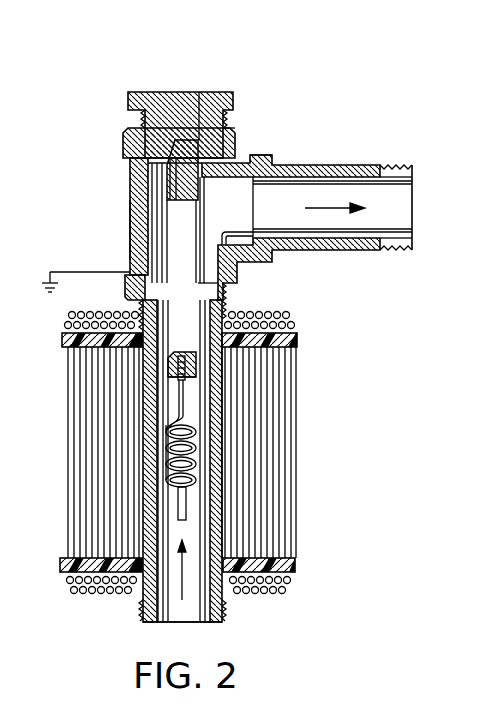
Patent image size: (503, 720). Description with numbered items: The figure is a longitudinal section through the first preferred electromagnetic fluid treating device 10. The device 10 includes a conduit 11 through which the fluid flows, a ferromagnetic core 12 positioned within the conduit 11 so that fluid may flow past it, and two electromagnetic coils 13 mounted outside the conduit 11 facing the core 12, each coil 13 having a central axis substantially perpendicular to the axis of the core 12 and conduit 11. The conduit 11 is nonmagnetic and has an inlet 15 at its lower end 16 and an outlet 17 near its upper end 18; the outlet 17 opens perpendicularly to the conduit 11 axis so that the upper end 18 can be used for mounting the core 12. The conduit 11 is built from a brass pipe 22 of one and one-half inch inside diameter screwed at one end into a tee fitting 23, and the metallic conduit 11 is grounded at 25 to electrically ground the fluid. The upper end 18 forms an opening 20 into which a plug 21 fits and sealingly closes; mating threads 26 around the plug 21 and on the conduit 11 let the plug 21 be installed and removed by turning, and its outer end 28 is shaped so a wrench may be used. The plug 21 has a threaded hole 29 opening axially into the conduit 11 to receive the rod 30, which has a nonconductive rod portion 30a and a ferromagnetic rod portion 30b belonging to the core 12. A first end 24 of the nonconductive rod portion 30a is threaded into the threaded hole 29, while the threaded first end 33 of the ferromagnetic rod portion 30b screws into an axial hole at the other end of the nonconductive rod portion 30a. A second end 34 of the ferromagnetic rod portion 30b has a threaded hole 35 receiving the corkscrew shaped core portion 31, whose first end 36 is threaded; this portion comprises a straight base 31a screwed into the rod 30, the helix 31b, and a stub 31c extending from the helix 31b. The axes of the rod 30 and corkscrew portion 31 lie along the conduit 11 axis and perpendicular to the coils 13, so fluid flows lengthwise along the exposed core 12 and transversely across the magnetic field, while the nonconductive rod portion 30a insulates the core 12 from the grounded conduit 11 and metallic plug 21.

The electromagnetic fluid treating device 10 is at (258, 131).
The conduit 11 is at (130, 179).
The ferromagnetic core 12 is at (222, 312).
The electromagnetic coils 13 is at (297, 508).
The inlet 15 is at (150, 622).
The lower end 16 is at (225, 612).
The outlet 17 is at (273, 163).
The upper end 18 is at (123, 140).
The opening 20 is at (232, 125).
The plug 21 is at (226, 128).
The brass pipe 22 is at (222, 522).
The tee fitting 23 is at (131, 237).
The first end of the nonconductive rod portion 24 is at (199, 135).
The ground 25 is at (127, 276).
The mating threads 26 is at (174, 142).
The outer end of the plug 28 is at (158, 135).
The threaded hole 29 is at (171, 140).
The rod 30 is at (213, 239).
The nonconductive rod portion 30a is at (130, 163).
The ferromagnetic rod portion 30b is at (198, 360).
The corkscrew shaped core portion 31 is at (197, 458).
The straight base 31a is at (185, 400).
The helix 31b is at (163, 433).
The stub 31c is at (178, 503).
The threaded first end of the ferromagnetic rod portion 33 is at (196, 192).
The second end of the ferromagnetic rod portion 34 is at (165, 378).
The threaded hole 35 is at (175, 368).
The first end of the corkscrew shaped core portion 36 is at (183, 388).